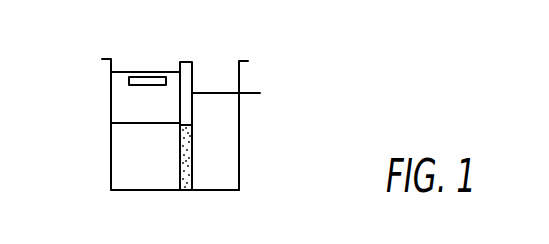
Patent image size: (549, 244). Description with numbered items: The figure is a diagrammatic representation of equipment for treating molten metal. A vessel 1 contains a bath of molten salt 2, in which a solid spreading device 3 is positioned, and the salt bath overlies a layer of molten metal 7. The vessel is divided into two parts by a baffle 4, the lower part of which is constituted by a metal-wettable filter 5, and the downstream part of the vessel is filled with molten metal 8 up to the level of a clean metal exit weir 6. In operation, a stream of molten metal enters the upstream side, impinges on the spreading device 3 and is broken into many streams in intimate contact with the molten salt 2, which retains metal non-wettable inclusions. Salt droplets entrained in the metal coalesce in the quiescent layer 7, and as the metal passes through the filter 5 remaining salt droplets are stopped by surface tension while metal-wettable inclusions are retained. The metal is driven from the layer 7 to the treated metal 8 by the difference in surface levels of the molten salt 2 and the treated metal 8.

The vessel 1 is at (110, 75).
The bath of molten salt 2 is at (128, 98).
The solid spreading device 3 is at (143, 78).
The baffle 4 is at (190, 60).
The metal-wettable filter 5 is at (187, 187).
The clean metal exit weir 6 is at (240, 110).
The layer of molten metal 7 is at (135, 161).
The molten metal 8 is at (222, 171).